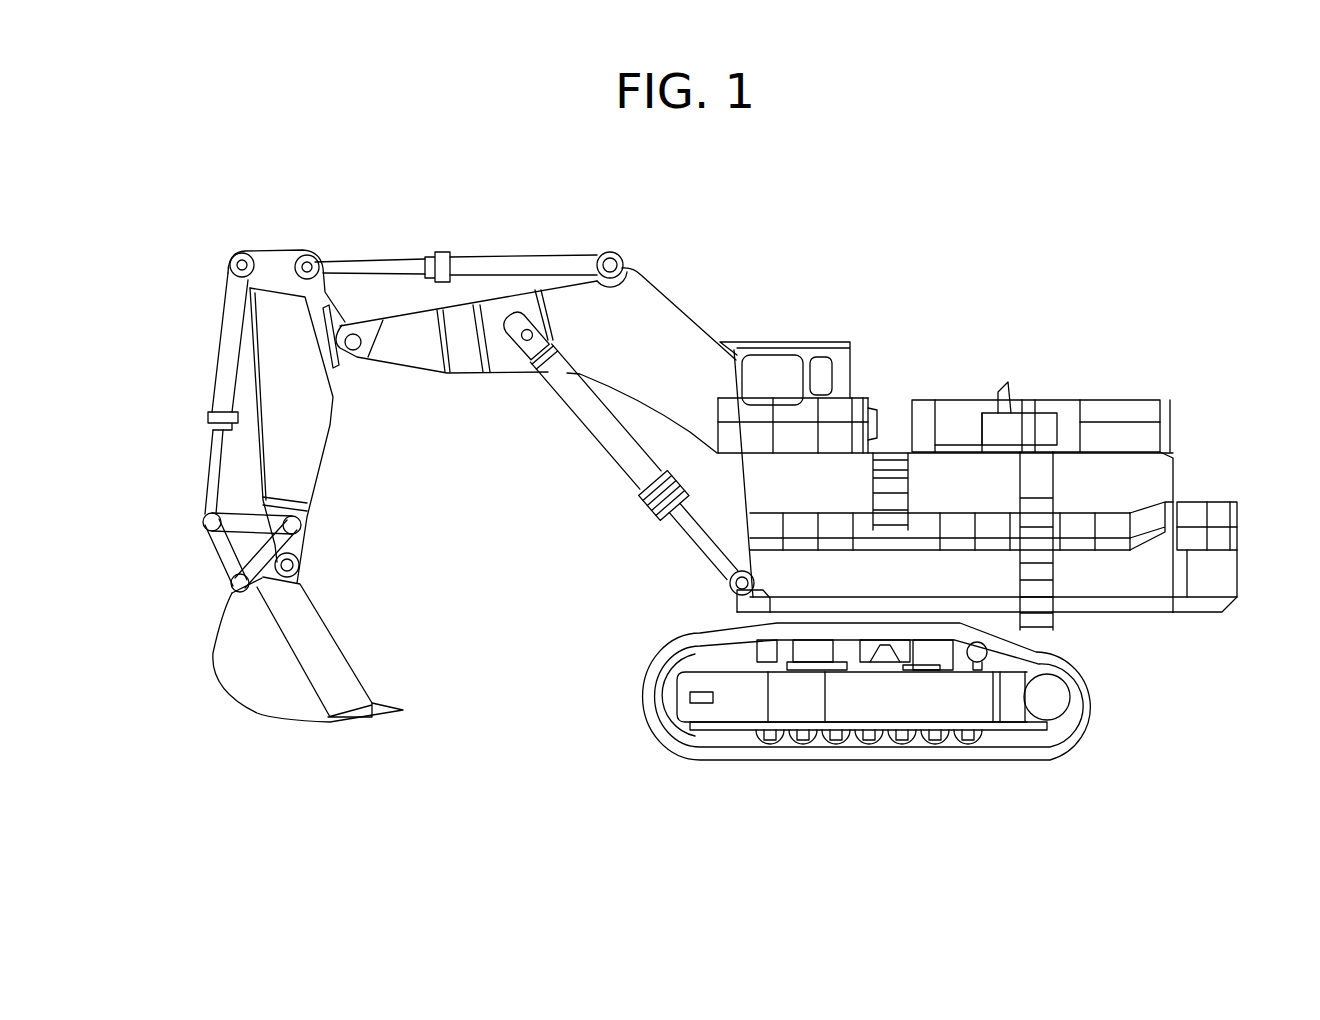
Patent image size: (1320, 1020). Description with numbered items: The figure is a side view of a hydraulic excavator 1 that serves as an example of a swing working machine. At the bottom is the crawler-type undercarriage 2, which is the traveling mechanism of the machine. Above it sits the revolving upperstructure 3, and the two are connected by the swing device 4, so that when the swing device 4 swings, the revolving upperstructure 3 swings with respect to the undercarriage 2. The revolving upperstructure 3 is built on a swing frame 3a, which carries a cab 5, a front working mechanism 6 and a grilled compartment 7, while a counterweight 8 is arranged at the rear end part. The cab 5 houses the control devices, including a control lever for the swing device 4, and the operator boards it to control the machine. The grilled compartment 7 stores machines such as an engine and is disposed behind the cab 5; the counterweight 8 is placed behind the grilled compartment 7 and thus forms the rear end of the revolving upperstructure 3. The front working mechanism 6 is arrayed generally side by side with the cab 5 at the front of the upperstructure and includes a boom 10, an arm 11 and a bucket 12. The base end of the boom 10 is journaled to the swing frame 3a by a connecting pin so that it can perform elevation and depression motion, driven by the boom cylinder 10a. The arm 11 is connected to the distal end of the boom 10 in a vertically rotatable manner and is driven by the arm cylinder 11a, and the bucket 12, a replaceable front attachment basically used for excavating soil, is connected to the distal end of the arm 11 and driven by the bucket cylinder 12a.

The hydraulic excavator 1 is at (1074, 291).
The undercarriage 2 is at (1105, 696).
The revolving upperstructure 3 is at (1190, 488).
The swing frame 3a is at (1117, 597).
The swing device 4 is at (897, 620).
The cab 5 is at (838, 342).
The front working mechanism 6 is at (286, 234).
The grilled compartment 7 is at (1166, 468).
The counterweight 8 is at (1238, 568).
The boom 10 is at (653, 308).
The boom cylinder 10a is at (610, 428).
The arm 11 is at (325, 450).
The arm cylinder 11a is at (520, 256).
The bucket 12 is at (313, 650).
The bucket cylinder 12a is at (226, 350).